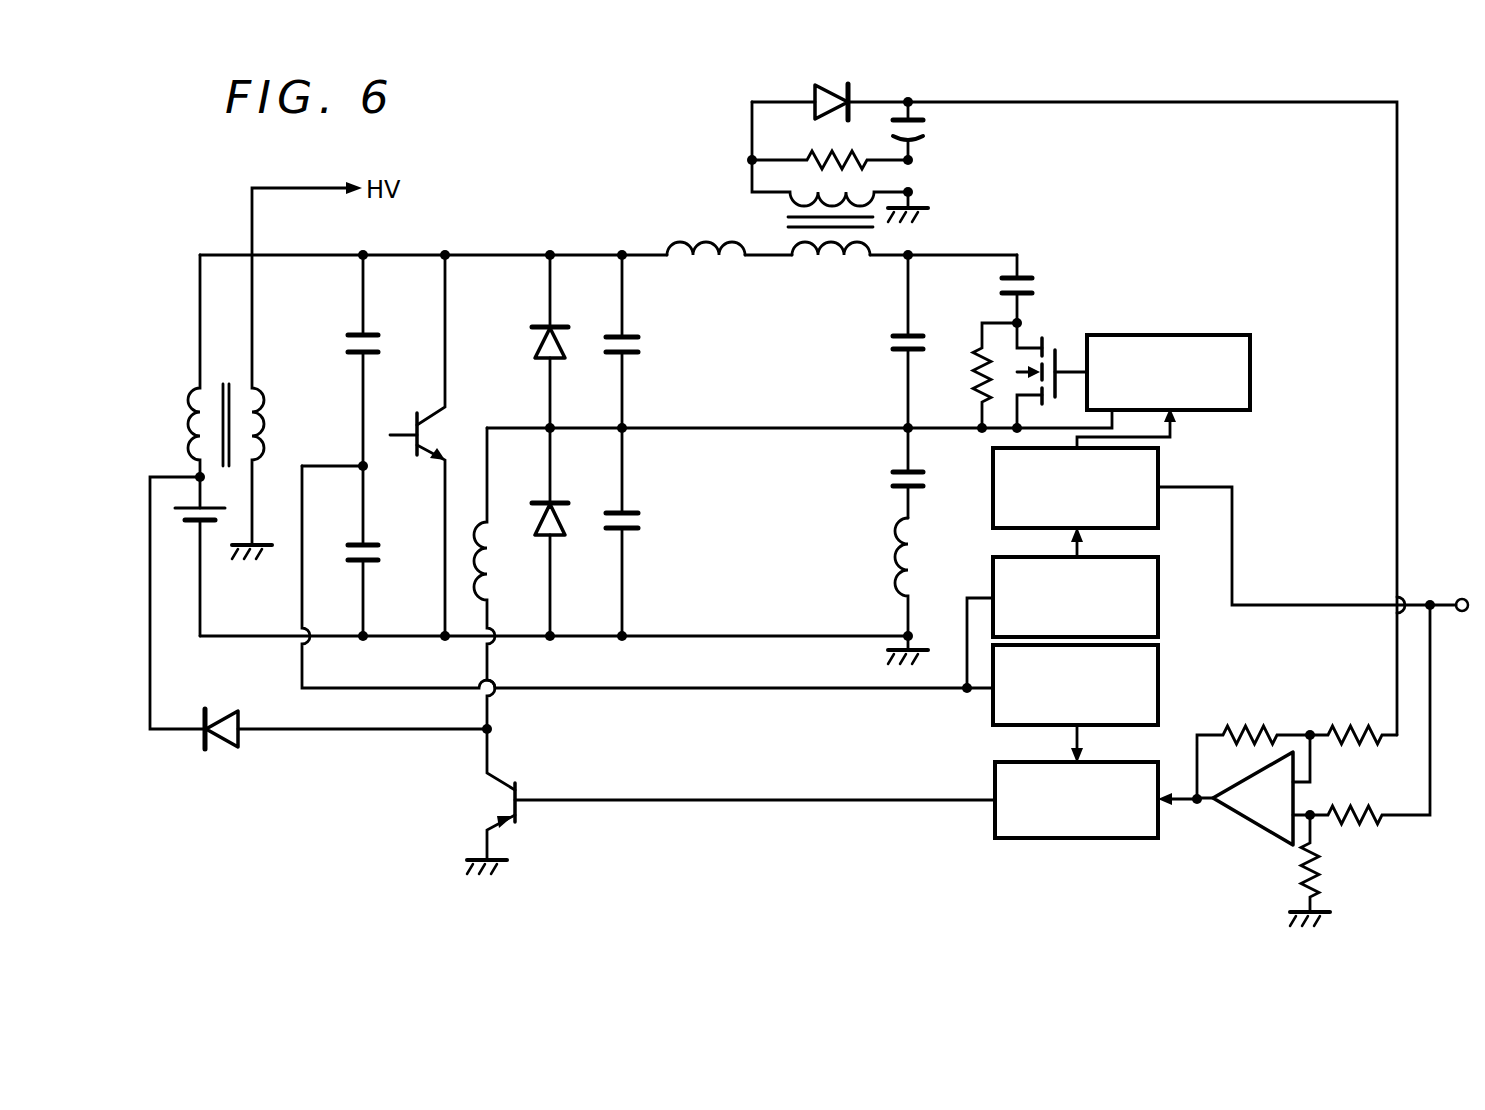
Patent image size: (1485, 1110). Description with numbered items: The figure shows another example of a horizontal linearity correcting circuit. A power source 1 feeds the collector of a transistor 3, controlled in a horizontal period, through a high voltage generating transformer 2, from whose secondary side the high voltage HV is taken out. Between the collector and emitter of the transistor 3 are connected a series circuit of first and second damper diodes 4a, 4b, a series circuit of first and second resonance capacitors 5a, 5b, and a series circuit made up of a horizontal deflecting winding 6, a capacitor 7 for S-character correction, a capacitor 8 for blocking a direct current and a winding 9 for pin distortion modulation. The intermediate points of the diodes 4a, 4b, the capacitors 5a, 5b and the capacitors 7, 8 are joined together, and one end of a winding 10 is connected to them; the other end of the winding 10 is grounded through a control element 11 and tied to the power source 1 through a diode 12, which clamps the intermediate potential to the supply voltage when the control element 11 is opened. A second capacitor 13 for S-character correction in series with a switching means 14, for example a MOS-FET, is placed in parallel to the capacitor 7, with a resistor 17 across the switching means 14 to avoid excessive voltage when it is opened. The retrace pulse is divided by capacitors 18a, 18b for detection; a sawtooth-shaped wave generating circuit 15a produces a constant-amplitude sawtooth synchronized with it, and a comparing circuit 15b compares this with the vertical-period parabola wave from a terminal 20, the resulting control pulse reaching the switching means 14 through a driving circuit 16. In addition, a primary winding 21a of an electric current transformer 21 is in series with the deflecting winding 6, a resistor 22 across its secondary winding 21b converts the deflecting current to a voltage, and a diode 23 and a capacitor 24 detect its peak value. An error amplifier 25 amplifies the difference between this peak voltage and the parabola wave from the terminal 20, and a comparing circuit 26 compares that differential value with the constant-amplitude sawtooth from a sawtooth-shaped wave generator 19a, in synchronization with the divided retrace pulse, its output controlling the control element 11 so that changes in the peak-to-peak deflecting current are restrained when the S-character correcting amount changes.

The power source 1 is at (182, 510).
The high voltage generating transformer 2 is at (225, 385).
The transistor 3 is at (405, 440).
The first damper diode 4a is at (532, 350).
The second damper diode 4b is at (561, 526).
The first resonance capacitor 5a is at (606, 345).
The second resonance capacitor 5b is at (640, 530).
The horizontal deflecting winding 6 is at (721, 270).
The capacitor for S-character correction 7 is at (893, 345).
The capacitor for blocking a direct current 8 is at (893, 478).
The winding for pin distortion modulation 9 is at (895, 556).
The winding 10 is at (472, 578).
The control element 11 is at (495, 806).
The diode 12 is at (231, 717).
The second capacitor for S-character correction 13 is at (1035, 284).
The switching means 14 is at (1033, 348).
The sawtooth-shaped wave generating circuit 15a is at (1160, 570).
The comparing circuit 15b is at (1160, 458).
The driving circuit 16 is at (1250, 357).
The resistor 17 is at (975, 386).
The capacitor for detection 18a is at (348, 345).
The capacitor for detection 18b is at (380, 552).
The sawtooth-shaped wave generator 19a is at (1158, 672).
The terminal 20 is at (1463, 596).
The electric current transformer 21 is at (786, 224).
The primary winding 21a is at (845, 270).
The secondary winding 21b is at (848, 186).
The resistor 22 is at (827, 148).
The diode 23 is at (811, 95).
The capacitor 24 is at (930, 128).
The error amplifier 25 is at (1230, 813).
The comparing circuit 26 is at (994, 772).